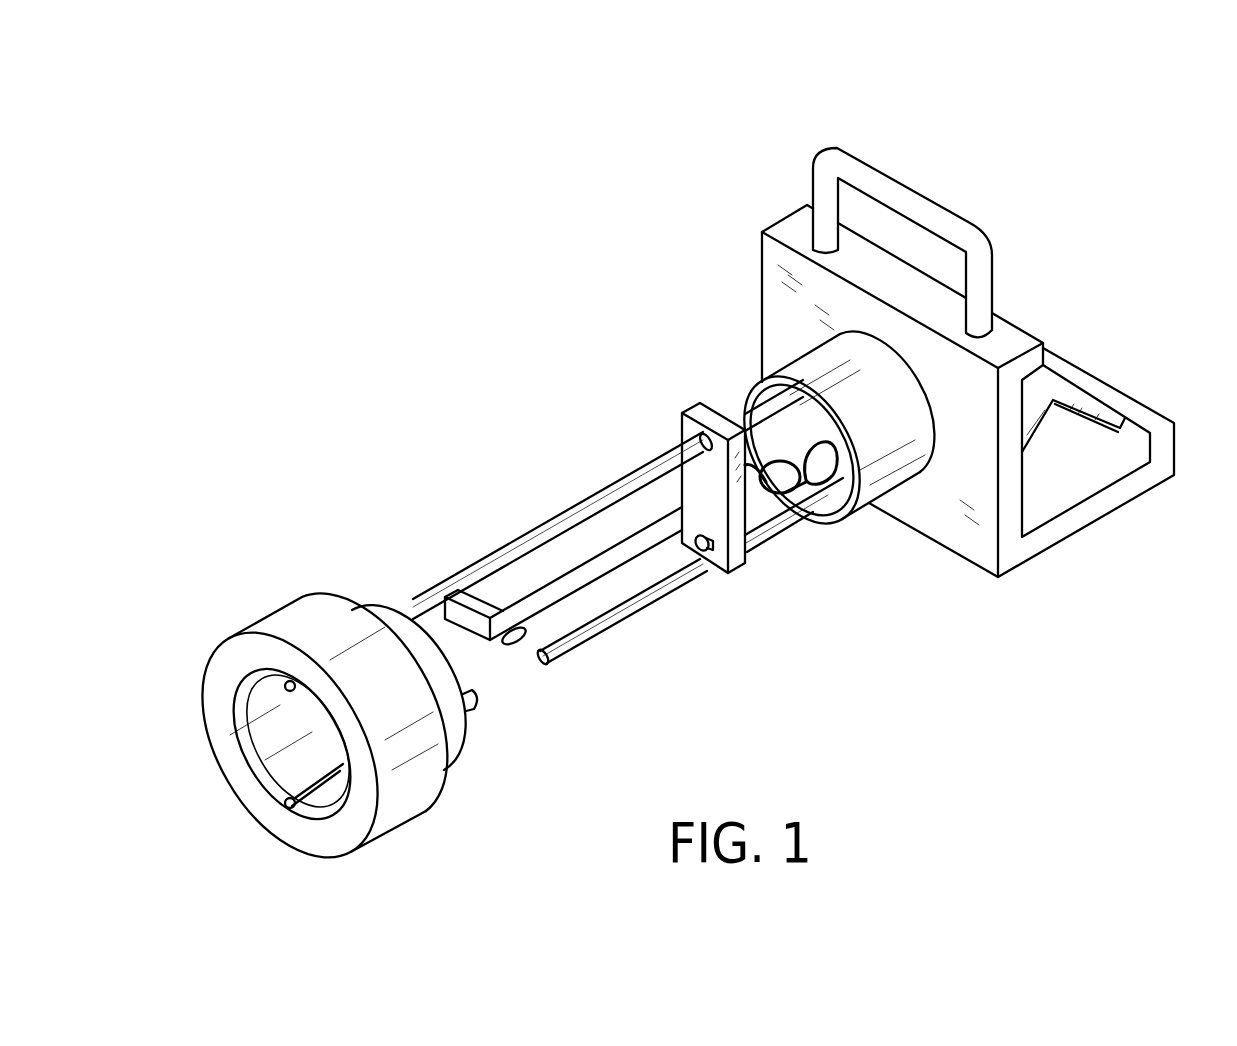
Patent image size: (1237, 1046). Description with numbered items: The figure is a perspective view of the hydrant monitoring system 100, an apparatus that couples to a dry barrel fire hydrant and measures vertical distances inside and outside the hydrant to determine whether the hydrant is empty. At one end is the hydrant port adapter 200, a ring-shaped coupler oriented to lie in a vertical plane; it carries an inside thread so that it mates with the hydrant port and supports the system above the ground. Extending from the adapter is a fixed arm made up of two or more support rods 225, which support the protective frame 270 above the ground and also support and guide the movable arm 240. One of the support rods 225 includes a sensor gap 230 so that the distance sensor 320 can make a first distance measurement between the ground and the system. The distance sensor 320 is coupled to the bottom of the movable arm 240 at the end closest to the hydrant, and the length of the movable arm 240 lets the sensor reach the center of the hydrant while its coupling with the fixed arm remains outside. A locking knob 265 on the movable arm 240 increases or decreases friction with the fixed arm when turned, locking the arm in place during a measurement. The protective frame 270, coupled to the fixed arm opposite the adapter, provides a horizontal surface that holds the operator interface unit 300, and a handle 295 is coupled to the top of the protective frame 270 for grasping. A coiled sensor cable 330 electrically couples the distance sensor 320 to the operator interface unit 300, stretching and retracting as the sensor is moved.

The hydrant monitoring system 100 is at (338, 258).
The hydrant port adapter 200 is at (397, 820).
The support rods 225 is at (577, 633).
The sensor gap 230 is at (572, 667).
The movable arm 240 is at (733, 497).
The locking knob 265 is at (708, 549).
The protective frame 270 is at (1020, 560).
The handle 295 is at (868, 176).
The operator interface unit 300 is at (1062, 386).
The distance sensor 320 is at (488, 602).
The sensor cable 330 is at (812, 444).